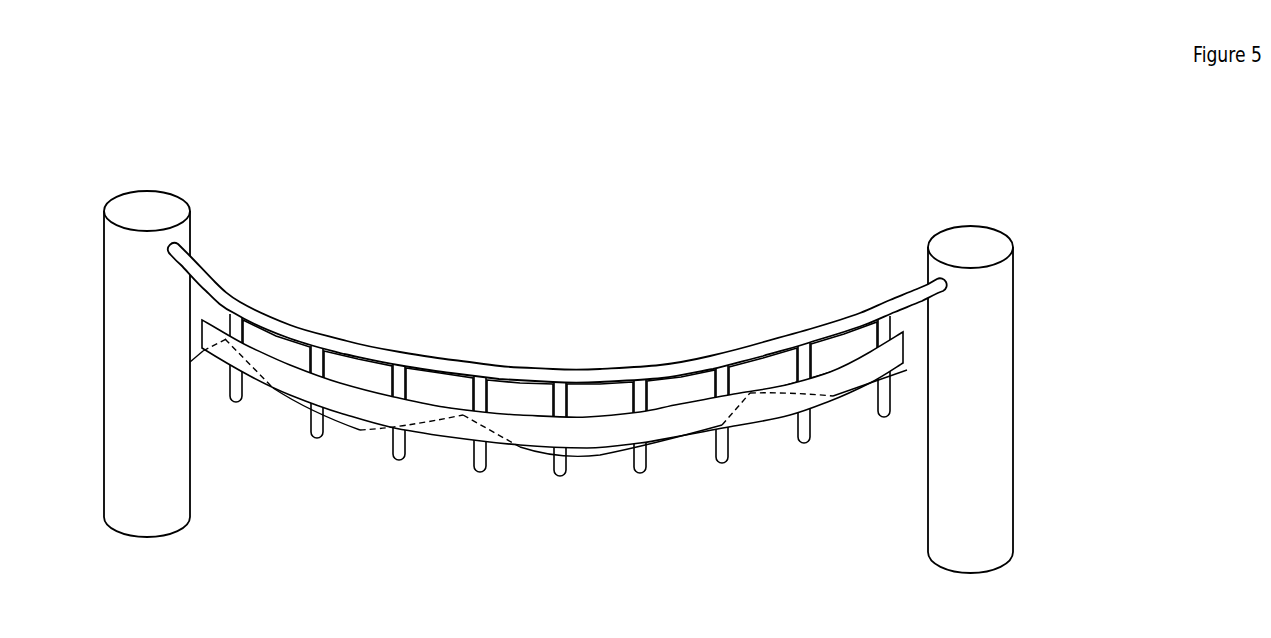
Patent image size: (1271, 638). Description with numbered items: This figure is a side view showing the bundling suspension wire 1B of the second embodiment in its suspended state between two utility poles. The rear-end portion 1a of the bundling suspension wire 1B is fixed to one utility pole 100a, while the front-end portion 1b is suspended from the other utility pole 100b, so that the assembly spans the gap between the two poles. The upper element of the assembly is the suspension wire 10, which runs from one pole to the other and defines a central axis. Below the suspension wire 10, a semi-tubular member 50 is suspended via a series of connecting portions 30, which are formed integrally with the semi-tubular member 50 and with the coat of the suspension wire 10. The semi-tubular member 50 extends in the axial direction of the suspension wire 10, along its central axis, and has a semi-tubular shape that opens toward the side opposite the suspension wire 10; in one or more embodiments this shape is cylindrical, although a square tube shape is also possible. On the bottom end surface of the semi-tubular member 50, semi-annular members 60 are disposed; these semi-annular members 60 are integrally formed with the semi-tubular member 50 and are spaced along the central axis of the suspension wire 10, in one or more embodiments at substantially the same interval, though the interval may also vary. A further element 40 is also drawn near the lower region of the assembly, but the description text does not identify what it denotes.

The utility pole 100a is at (146, 201).
The utility pole 100b is at (995, 229).
The bundling suspension wire 1B is at (557, 358).
The rear-end portion 1a is at (196, 253).
The front-end portion 1b is at (920, 282).
The suspension wire 10 is at (210, 275).
The connecting portions 30 is at (324, 366).
The cord 40 is at (600, 457).
The semi-tubular member 50 is at (268, 357).
The semi-annular members 60 is at (393, 463).